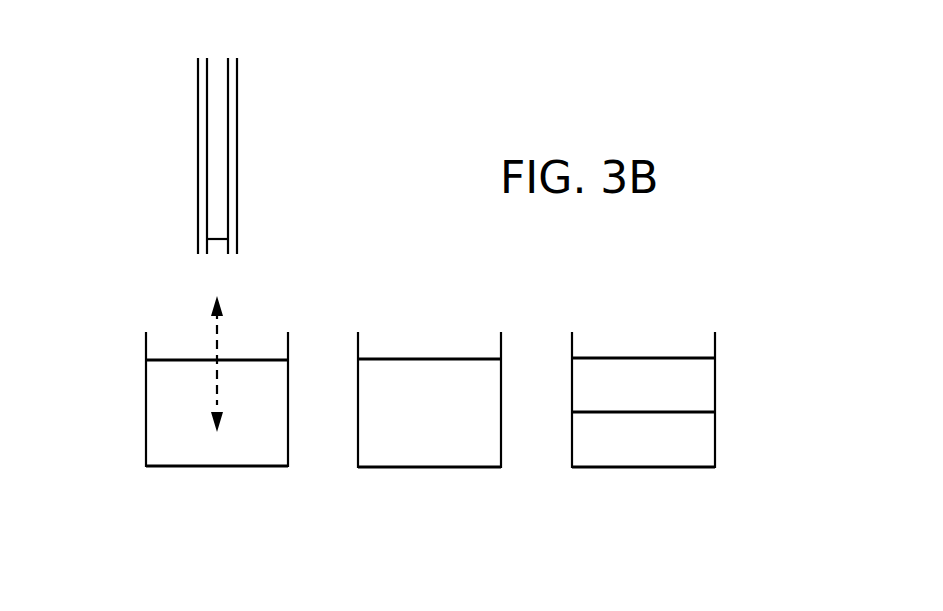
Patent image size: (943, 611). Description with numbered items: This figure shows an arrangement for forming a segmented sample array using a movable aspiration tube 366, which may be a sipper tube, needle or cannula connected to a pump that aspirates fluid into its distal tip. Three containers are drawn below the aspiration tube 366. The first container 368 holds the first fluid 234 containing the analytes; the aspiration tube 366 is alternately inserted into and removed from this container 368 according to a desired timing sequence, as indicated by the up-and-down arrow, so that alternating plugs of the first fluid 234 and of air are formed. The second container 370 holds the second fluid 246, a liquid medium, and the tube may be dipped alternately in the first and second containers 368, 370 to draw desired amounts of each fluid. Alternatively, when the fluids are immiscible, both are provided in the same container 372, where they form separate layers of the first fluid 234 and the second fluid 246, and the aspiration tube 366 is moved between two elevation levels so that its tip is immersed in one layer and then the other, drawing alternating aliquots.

The aspiration tube 366 is at (198, 160).
The container 368 is at (145, 348).
The second container 370 is at (357, 345).
The container 372 is at (716, 343).
The first fluid 234 is at (192, 450).
The second fluid 246 is at (434, 448).